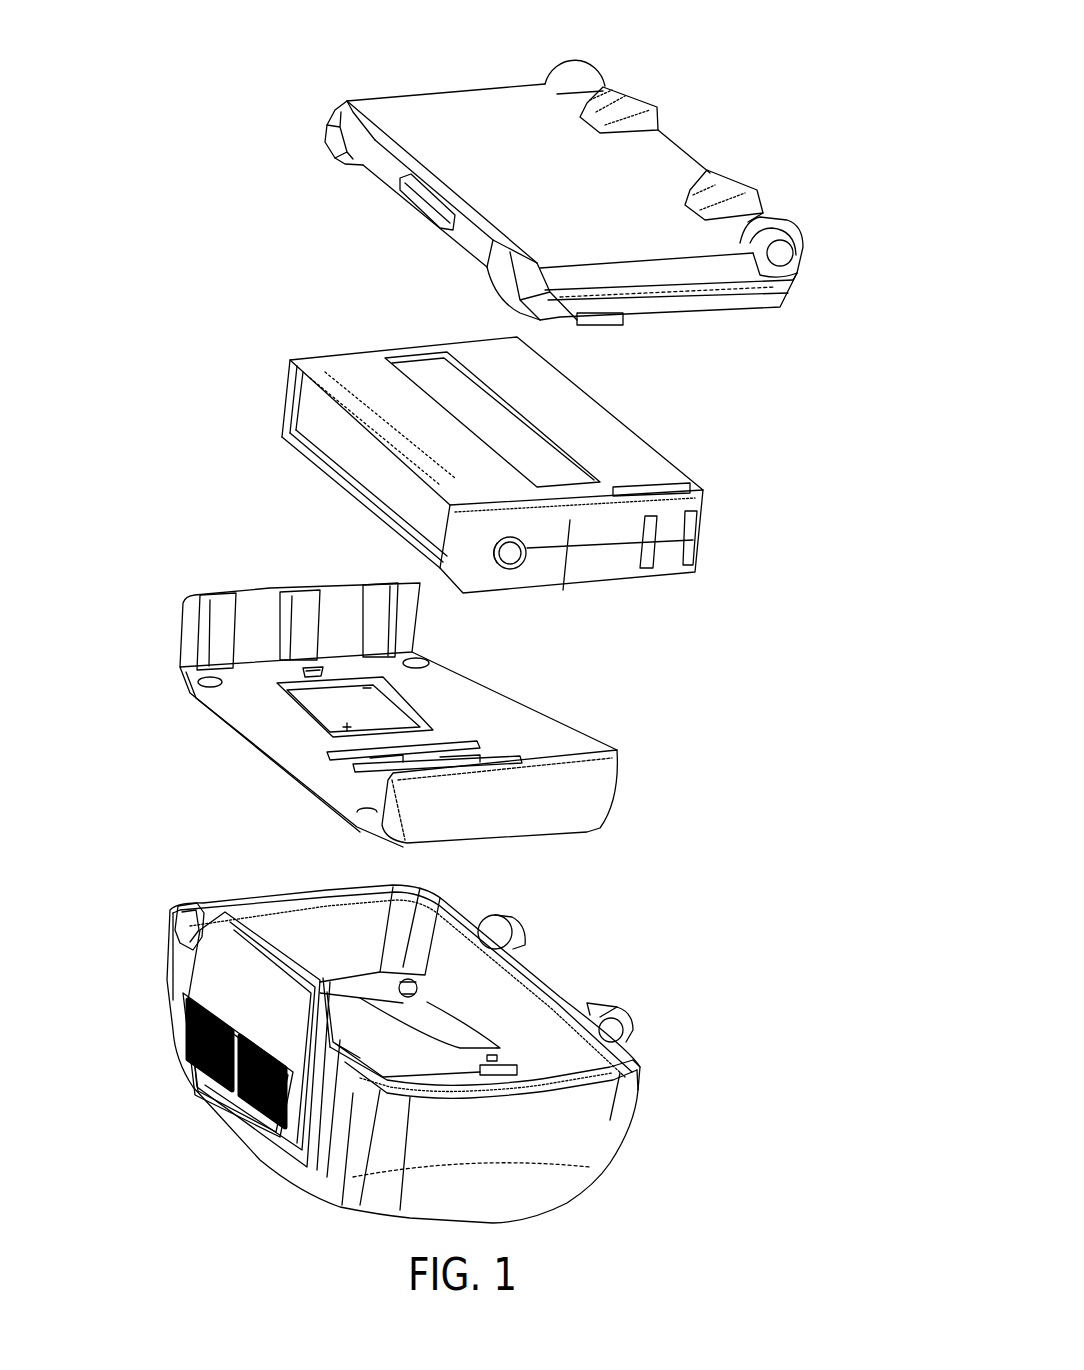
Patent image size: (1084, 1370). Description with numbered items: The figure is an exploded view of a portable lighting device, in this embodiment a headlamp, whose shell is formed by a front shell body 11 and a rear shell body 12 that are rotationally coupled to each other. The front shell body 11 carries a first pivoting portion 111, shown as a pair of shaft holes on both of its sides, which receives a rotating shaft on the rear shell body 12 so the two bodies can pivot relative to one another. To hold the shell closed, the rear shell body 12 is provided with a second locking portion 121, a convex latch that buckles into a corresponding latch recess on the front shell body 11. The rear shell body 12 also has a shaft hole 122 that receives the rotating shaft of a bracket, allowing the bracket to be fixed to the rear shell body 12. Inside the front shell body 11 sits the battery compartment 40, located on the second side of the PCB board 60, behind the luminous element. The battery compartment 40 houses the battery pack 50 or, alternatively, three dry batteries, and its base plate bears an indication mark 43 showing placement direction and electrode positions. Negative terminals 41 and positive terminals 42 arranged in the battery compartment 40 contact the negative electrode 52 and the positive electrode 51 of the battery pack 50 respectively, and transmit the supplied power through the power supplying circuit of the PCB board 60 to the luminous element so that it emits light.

The front shell body 11 is at (429, 1054).
The first pivoting portion 111 is at (627, 1030).
The rear shell body 12 is at (623, 174).
The second locking portion 121 is at (420, 203).
The shaft hole 122 is at (787, 257).
The battery compartment 40 is at (376, 649).
The negative terminal 41 is at (230, 627).
The positive terminal 42 is at (313, 623).
The indication mark 43 is at (353, 676).
The battery pack 50 is at (497, 457).
The positive electrode of battery pack 51 is at (520, 562).
The negative electrode of battery pack 52 is at (650, 547).
The PCB board 60 is at (380, 991).